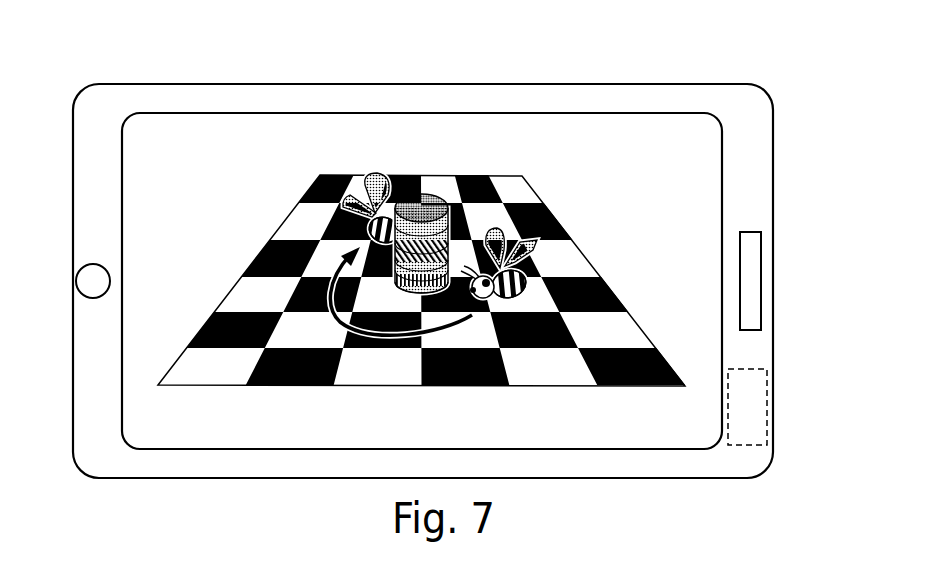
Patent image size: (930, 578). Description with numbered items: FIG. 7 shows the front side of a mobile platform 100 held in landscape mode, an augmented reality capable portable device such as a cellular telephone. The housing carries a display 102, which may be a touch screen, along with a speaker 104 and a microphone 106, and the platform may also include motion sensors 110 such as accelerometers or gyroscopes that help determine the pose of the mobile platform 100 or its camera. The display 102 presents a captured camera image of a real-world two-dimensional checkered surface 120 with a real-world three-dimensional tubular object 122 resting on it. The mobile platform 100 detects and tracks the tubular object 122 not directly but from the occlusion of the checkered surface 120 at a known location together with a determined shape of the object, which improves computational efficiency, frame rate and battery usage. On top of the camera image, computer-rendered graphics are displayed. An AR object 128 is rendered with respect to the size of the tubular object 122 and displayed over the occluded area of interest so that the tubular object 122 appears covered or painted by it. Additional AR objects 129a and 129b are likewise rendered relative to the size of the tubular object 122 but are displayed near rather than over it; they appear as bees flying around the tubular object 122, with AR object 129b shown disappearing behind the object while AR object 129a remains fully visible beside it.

The mobile platform 100 is at (116, 48).
The display 102 is at (663, 111).
The speaker 104 is at (762, 253).
The microphone 106 is at (77, 282).
The motion sensors 110 is at (767, 405).
The 2D checkered surface 120 is at (292, 217).
The 3D tubular object 122 is at (437, 200).
The AR object 128 is at (432, 184).
The AR object 129a is at (538, 240).
The AR object 129b is at (367, 176).